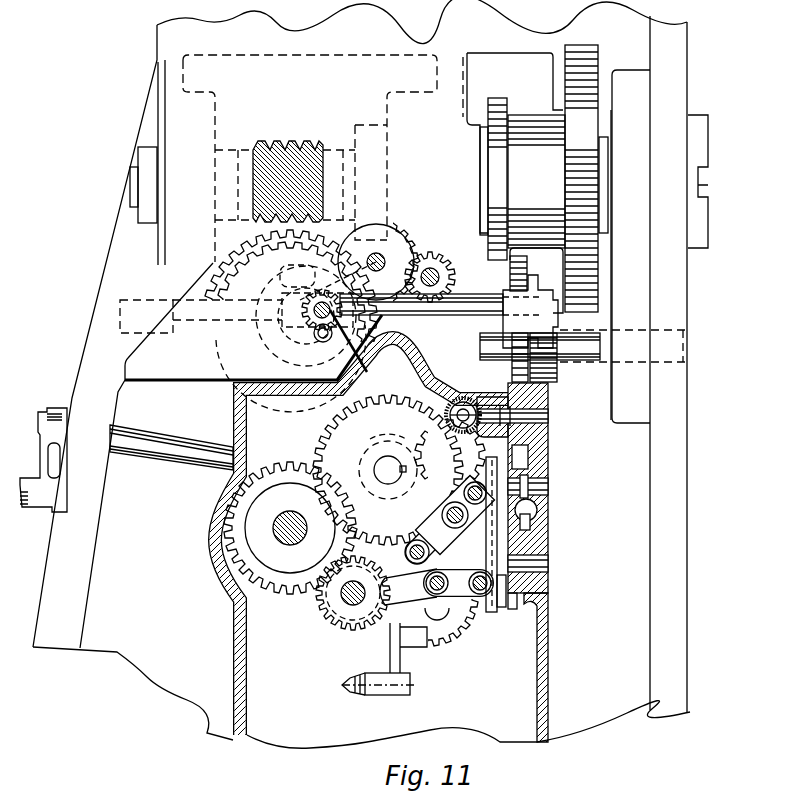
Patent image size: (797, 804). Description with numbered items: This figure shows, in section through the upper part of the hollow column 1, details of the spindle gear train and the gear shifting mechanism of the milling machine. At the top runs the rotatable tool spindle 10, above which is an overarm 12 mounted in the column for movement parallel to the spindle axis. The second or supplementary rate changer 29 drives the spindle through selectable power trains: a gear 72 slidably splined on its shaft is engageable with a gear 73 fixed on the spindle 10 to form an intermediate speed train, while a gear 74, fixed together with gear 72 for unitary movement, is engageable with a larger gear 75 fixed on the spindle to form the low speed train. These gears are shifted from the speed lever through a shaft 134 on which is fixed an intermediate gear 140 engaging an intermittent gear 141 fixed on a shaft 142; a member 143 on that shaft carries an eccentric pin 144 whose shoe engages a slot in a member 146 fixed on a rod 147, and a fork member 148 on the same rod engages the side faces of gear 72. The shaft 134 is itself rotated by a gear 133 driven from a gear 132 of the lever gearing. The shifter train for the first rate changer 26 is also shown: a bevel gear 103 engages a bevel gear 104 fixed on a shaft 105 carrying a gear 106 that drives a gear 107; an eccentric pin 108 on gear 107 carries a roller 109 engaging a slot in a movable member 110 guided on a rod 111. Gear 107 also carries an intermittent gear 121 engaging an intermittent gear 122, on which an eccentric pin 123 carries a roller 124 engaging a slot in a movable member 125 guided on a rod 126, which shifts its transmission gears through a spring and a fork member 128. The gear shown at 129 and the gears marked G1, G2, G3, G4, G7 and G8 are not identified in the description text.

The hollow column 1 is at (688, 522).
The tool spindle 10 is at (708, 142).
The overarm 12 is at (431, 426).
The rate changer 26 is at (305, 616).
The second or supplementary rate changer 29 is at (340, 228).
The gear 72 is at (528, 265).
The gear 73 is at (497, 104).
The gear 74 is at (558, 377).
The gear 75 is at (585, 46).
The bevel gear 103 is at (460, 470).
The bevel gear 104 is at (538, 452).
The shaft 105 is at (552, 417).
The gear 106 is at (549, 395).
The gear 107 is at (513, 512).
The pin 108 is at (535, 478).
The roller 109 is at (547, 493).
The movable member 110 is at (488, 528).
The rod 111 is at (470, 488).
The intermittent gear 121 is at (540, 507).
The intermittent gear 122 is at (510, 607).
The eccentric pin 123 is at (552, 558).
The roller 124 is at (545, 597).
The movable member 125 is at (496, 612).
The rod 126 is at (481, 594).
The fork member 128 is at (453, 602).
The gear 129 is at (395, 625).
The gear 132 is at (452, 285).
The gear 133 is at (424, 257).
The shaft 134 is at (378, 251).
The intermediate gear 140 is at (323, 257).
The intermittent gear 141 is at (298, 292).
The shaft 142 is at (362, 346).
The member 143 is at (338, 350).
The eccentric pin 144 is at (312, 336).
The member 146 is at (282, 336).
The rod 147 is at (421, 315).
The fork member 148 is at (508, 275).
The bracket G1 is at (44, 471).
The shaft G2 is at (157, 441).
The gear G3 is at (300, 464).
The gear G4 is at (330, 440).
The gear G7 is at (222, 322).
The worm G8 is at (292, 176).